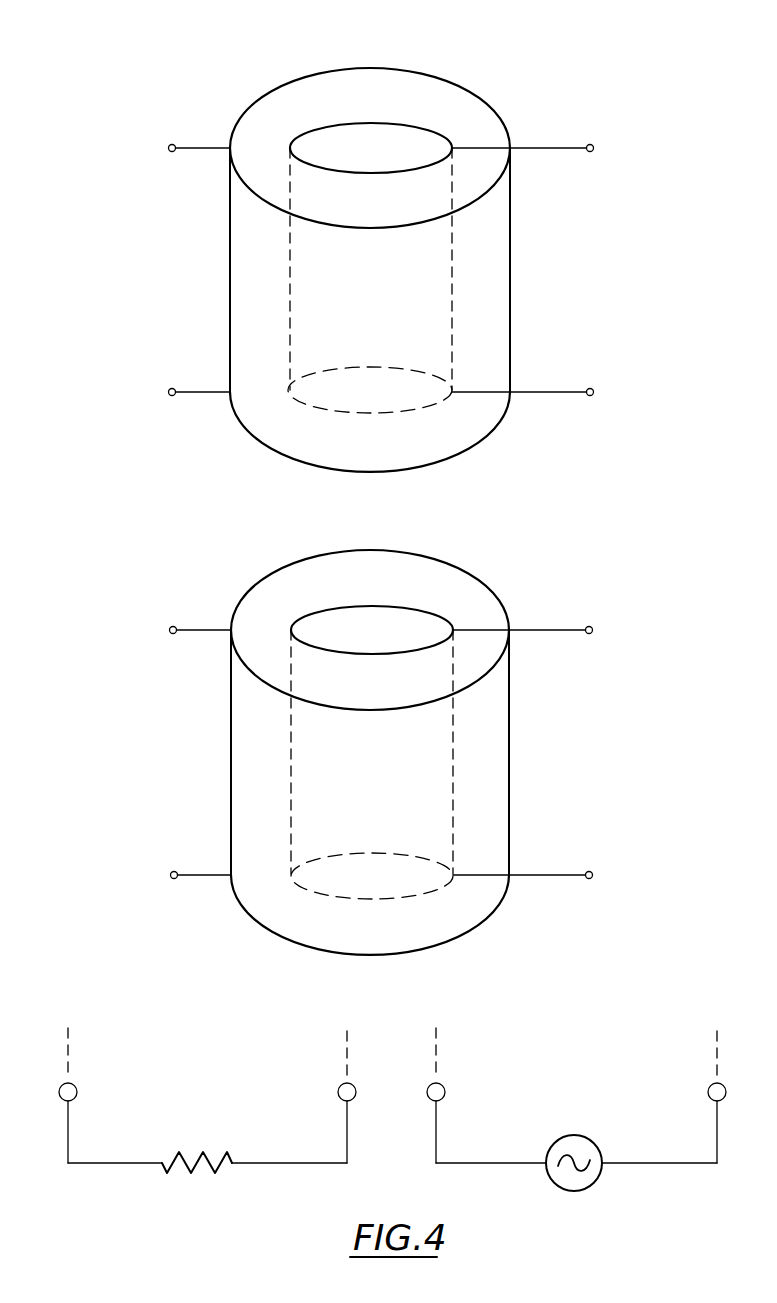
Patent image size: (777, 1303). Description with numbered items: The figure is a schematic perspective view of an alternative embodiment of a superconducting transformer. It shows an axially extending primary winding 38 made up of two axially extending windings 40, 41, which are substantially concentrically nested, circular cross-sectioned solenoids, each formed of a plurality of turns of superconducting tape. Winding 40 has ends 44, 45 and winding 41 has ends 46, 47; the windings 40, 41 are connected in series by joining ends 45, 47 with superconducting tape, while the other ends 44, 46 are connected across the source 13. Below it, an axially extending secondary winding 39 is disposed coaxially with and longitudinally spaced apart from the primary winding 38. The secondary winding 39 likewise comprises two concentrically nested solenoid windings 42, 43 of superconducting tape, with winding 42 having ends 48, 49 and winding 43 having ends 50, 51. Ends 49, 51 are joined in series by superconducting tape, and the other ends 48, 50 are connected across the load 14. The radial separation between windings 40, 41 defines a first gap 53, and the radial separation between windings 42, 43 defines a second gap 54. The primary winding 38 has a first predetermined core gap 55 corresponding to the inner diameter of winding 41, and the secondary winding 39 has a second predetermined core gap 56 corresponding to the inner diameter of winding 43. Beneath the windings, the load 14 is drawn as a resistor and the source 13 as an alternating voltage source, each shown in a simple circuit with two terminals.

The primary winding 38 is at (364, 242).
The secondary winding 39 is at (378, 727).
The winding 40 is at (253, 100).
The winding 41 is at (360, 123).
The winding 42 is at (257, 585).
The winding 43 is at (328, 608).
The end 44 is at (178, 150).
The end 45 is at (178, 392).
The end 46 is at (546, 150).
The end 47 is at (546, 392).
The end 48 is at (179, 630).
The end 49 is at (180, 876).
The end 50 is at (546, 630).
The end 51 is at (546, 876).
The first gap 53 is at (480, 125).
The second gap 54 is at (477, 615).
The first predetermined core gap 55 is at (397, 143).
The second predetermined core gap 56 is at (388, 630).
The load 14 is at (185, 1135).
The source 13 is at (605, 1128).